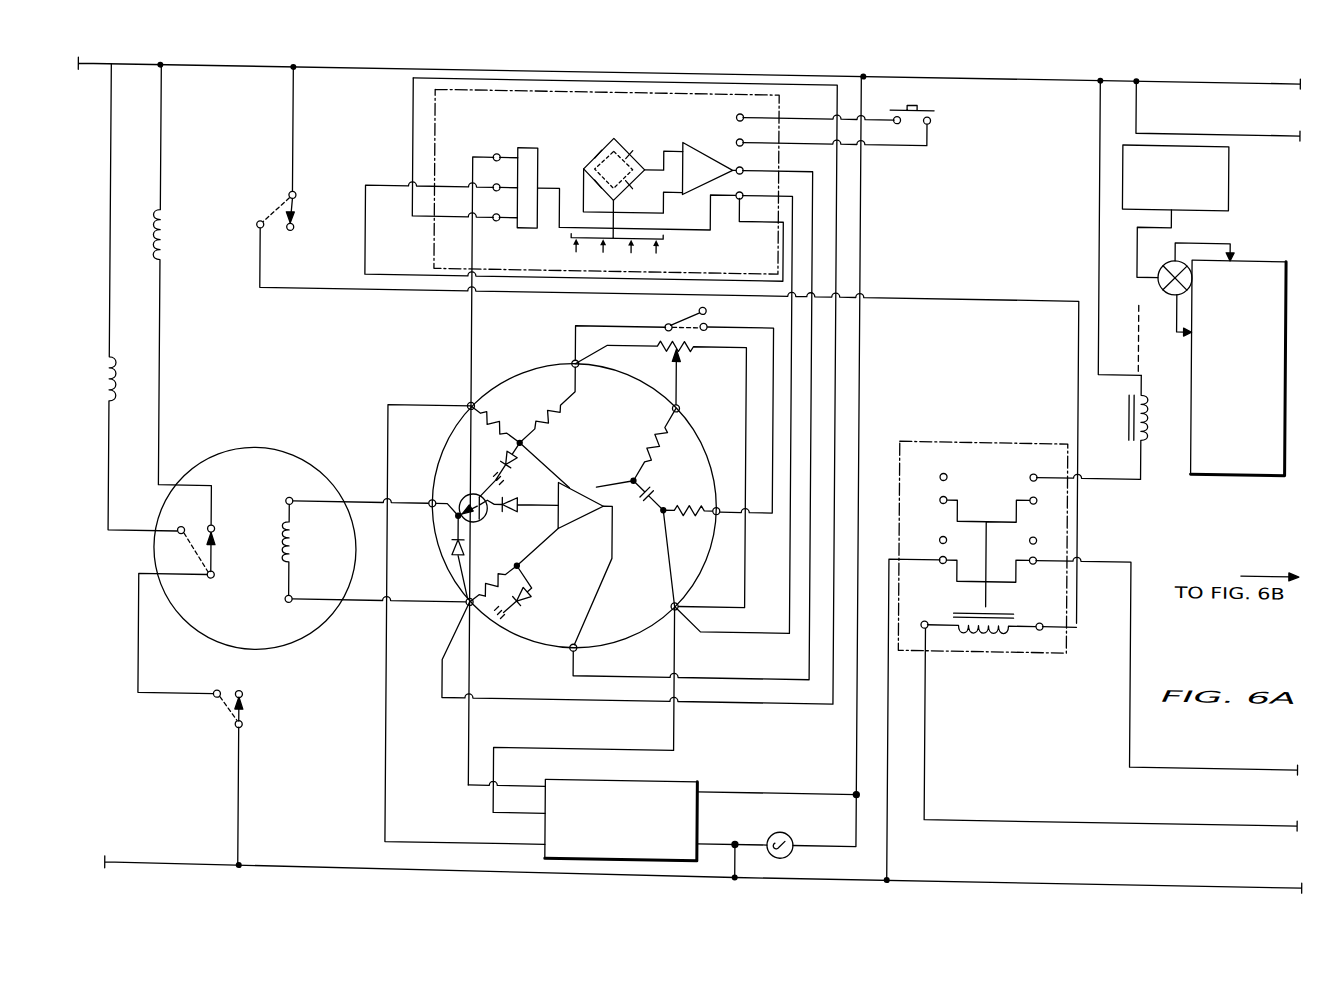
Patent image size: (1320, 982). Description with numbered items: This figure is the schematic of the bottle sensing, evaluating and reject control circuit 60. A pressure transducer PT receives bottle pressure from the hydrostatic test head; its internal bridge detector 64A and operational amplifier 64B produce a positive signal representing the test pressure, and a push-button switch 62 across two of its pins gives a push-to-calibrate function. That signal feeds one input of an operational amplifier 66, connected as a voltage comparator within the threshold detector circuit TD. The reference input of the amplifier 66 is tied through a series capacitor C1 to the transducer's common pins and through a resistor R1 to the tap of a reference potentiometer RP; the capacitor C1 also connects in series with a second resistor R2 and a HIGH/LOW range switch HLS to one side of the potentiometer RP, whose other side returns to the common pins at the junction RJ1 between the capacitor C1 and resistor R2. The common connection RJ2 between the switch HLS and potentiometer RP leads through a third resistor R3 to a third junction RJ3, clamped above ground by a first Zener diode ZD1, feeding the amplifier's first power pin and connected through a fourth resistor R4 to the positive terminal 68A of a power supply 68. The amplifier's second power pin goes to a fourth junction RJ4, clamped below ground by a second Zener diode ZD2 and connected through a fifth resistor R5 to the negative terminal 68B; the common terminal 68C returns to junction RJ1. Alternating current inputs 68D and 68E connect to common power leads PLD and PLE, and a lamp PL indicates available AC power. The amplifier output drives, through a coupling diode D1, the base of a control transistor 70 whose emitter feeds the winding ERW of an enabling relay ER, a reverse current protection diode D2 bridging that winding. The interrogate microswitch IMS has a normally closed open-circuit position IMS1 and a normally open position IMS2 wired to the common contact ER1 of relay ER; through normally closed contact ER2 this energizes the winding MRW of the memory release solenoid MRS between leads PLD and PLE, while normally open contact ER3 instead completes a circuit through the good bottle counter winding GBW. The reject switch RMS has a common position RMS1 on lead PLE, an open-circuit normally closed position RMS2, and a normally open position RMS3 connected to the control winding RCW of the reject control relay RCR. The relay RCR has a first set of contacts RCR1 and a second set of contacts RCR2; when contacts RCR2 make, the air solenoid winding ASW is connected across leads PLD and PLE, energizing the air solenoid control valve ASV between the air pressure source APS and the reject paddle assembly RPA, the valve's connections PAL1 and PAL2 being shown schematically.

The bottle selection detecting and reject control circuit 60 is at (158, 785).
The push-button switch 62 is at (965, 118).
The bridge detector 64A is at (602, 146).
The operational amplifier 64B is at (714, 176).
The operational amplifier 66 is at (598, 478).
The power supply 68 is at (625, 832).
The positive direct current terminal 68A is at (527, 842).
The negative direct current terminal 68B is at (527, 784).
The common terminal 68C is at (527, 811).
The alternating current input 68D is at (777, 836).
The alternating current input 68E is at (712, 787).
The control transistor 70 is at (452, 494).
The second common power lead PLE is at (766, 70).
The first common power lead PLD is at (631, 874).
The memory release solenoid MRS is at (122, 297).
The good bottle counter winding GBW is at (155, 199).
The winding of the memory release solenoid MRW is at (182, 295).
The reject switch RMS is at (643, 344).
The common switch position RMS1 is at (294, 195).
The normally closed switch position RMS2 is at (289, 234).
The normally open contact position RMS3 is at (272, 209).
The pressure transducer PT is at (599, 434).
The air pressure source APS is at (1276, 157).
The air solenoid control valve ASV is at (1181, 252).
The pneumatic air line 1 PAL1 is at (1233, 238).
The pneumatic air line 2 PAL2 is at (1160, 276).
The reject paddle assembly RPA is at (1318, 376).
The air solenoid winding ASW is at (1116, 426).
The reject control relay RCR is at (1093, 664).
The retreat control relay contact 1 RCR1 is at (1037, 551).
The second set of contacts RCR2 is at (1017, 503).
The control winding RCW is at (1093, 676).
The enabling relay ER is at (302, 571).
The common contact position ER1 is at (213, 583).
The normally closed contact position ER2 is at (214, 529).
The normally open contact position ER3 is at (181, 531).
The enabling relay winding ERW is at (294, 546).
The interrogate microswitch IMS is at (233, 766).
The normally closed open circuit position IMS1 is at (245, 697).
The normally open contact position IMS2 is at (217, 694).
The threshold detector circuit TD is at (579, 575).
The HIGH/LOW range switch HLS is at (714, 308).
The reference potentiometer RP is at (688, 352).
The first junction RJ1 is at (662, 515).
The common connection RJ2 is at (572, 355).
The third junction RJ3 is at (524, 442).
The fourth junction RJ4 is at (517, 562).
The series resistor R1 is at (660, 448).
The second resistor R2 is at (686, 514).
The third resistor R3 is at (545, 412).
The fourth resistor R4 is at (492, 412).
The fifth resistor R5 is at (490, 585).
The series capacitor C1 is at (656, 494).
The coupling diode D1 is at (522, 497).
The reverse current protection diode D2 is at (470, 564).
The first Zener diode ZD1 is at (496, 470).
The second Zener diode ZD2 is at (529, 592).
The lamp PL is at (792, 830).